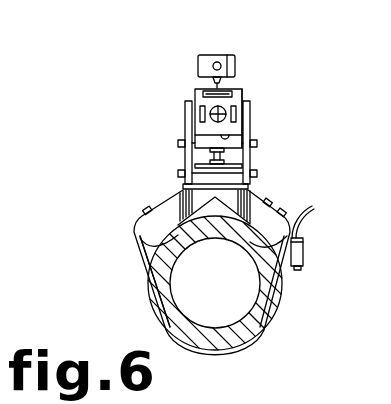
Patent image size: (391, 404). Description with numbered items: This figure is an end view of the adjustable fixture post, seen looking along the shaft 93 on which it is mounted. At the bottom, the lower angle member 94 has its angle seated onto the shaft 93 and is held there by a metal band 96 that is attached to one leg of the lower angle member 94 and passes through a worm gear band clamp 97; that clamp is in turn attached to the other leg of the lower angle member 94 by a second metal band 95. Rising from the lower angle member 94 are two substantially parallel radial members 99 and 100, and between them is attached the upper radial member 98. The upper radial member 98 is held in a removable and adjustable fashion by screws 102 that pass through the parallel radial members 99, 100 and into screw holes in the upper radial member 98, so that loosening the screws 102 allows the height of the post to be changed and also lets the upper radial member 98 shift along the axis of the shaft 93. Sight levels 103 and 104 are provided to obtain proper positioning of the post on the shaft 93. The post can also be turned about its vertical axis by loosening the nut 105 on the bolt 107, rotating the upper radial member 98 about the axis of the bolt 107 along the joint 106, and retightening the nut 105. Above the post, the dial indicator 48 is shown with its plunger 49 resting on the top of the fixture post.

The dial indicator 48 is at (217, 55).
The plunger 49 is at (212, 80).
The shaft 93 is at (149, 253).
The lower angle member 94 is at (162, 218).
The metal band 95 is at (277, 208).
The metal band 96 is at (283, 312).
The worm gear band clamp 97 is at (303, 252).
The upper radial member 98 is at (240, 95).
The radial member 99 is at (186, 106).
The radial member 100 is at (250, 103).
The screws 102 is at (179, 143).
The sight level 103 is at (199, 89).
The sight level 104 is at (240, 88).
The nut 105 is at (224, 155).
The joint 106 is at (232, 136).
The bolt 107 is at (216, 152).